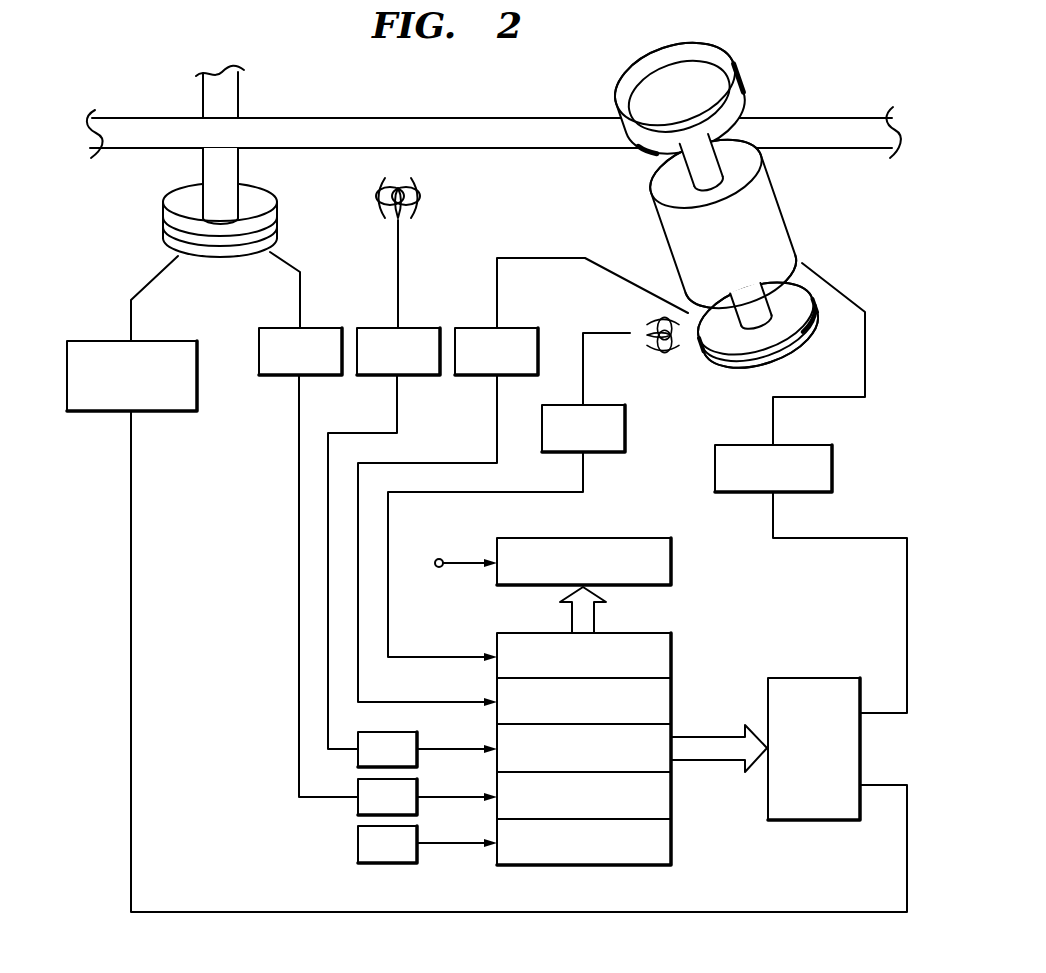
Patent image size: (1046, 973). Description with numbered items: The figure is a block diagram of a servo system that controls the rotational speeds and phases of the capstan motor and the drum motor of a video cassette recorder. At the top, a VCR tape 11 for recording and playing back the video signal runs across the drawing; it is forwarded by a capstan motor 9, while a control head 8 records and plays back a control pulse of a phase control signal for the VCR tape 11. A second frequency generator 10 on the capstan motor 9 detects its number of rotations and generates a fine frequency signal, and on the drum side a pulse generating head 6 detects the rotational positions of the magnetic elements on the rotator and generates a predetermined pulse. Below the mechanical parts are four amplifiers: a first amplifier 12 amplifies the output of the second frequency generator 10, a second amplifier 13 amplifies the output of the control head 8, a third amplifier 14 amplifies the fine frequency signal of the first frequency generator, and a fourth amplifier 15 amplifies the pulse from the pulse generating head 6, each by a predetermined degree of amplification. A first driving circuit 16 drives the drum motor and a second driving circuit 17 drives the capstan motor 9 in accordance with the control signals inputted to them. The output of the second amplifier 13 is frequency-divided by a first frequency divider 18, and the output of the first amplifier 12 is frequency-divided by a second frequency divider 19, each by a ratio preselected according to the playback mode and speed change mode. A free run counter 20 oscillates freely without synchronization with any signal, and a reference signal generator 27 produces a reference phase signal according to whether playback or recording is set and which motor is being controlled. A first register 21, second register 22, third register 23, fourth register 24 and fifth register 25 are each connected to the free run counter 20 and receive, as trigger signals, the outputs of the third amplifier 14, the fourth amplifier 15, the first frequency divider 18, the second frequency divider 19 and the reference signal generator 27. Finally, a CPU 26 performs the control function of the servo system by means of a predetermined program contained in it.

The pulse generating head 6 is at (664, 354).
The control head 8 is at (428, 198).
The capstan motor 9 is at (279, 205).
The second frequency generator 10 is at (236, 258).
The VCR tape 11 is at (343, 118).
The first amplifier 12 is at (270, 375).
The second amplifier 13 is at (368, 375).
The third amplifier 14 is at (466, 375).
The fourth amplifier 15 is at (625, 436).
The first driving circuit 16 is at (832, 474).
The second driving circuit 17 is at (180, 411).
The first frequency divider 18 is at (417, 735).
The second frequency divider 19 is at (417, 782).
The free run counter 20 is at (663, 538).
The first register 21 is at (660, 668).
The second register 22 is at (660, 713).
The third register 23 is at (658, 759).
The fourth register 24 is at (658, 803).
The fifth register 25 is at (658, 848).
The CPU 26 is at (832, 678).
The reference signal generator 27 is at (417, 829).